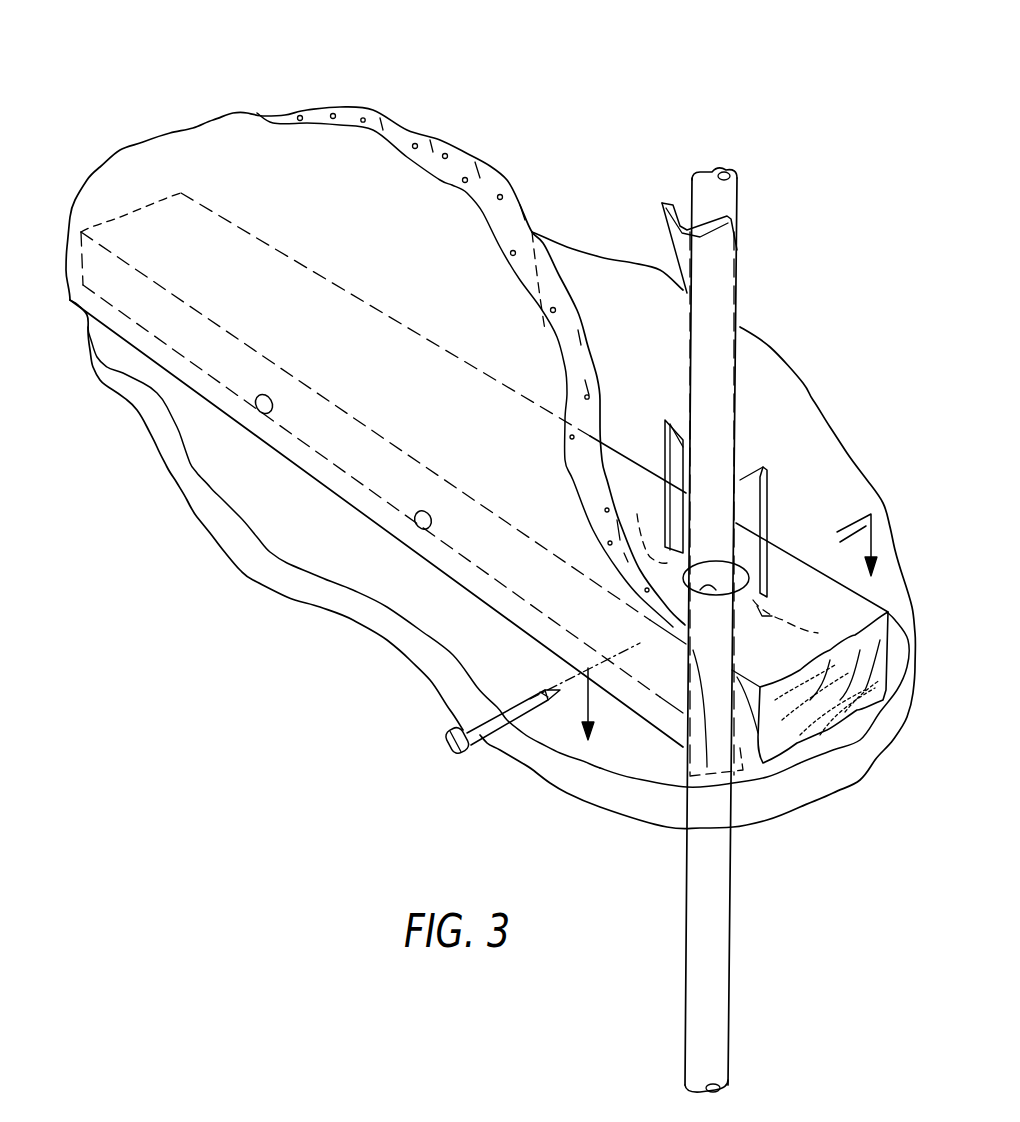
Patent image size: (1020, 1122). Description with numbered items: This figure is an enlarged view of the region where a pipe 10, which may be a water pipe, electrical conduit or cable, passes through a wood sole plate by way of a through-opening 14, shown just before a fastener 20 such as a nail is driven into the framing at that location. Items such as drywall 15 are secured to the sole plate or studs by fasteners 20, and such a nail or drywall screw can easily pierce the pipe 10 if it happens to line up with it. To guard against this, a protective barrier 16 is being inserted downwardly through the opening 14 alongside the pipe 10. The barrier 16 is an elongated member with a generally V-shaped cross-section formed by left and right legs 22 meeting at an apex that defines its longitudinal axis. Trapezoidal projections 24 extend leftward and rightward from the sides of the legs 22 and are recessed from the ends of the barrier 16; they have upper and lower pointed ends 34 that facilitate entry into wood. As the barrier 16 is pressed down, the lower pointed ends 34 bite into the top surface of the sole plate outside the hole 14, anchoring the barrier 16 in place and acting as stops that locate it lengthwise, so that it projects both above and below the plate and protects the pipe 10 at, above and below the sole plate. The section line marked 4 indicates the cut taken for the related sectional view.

The pipe 10 is at (738, 178).
The through-opening 14 is at (703, 590).
The drywall 15 is at (313, 164).
The protective barrier 16 is at (752, 427).
The fasteners 20 is at (260, 407).
The left and right legs 22 is at (710, 307).
The projections 24 is at (660, 427).
The pointed ends 34 is at (740, 563).
The section line 4- 4 is at (703, 630).